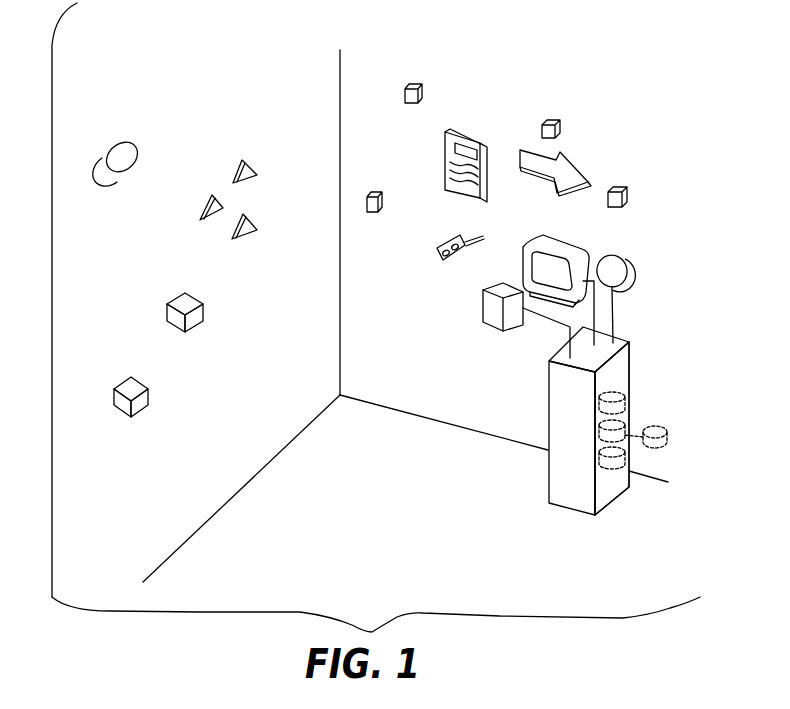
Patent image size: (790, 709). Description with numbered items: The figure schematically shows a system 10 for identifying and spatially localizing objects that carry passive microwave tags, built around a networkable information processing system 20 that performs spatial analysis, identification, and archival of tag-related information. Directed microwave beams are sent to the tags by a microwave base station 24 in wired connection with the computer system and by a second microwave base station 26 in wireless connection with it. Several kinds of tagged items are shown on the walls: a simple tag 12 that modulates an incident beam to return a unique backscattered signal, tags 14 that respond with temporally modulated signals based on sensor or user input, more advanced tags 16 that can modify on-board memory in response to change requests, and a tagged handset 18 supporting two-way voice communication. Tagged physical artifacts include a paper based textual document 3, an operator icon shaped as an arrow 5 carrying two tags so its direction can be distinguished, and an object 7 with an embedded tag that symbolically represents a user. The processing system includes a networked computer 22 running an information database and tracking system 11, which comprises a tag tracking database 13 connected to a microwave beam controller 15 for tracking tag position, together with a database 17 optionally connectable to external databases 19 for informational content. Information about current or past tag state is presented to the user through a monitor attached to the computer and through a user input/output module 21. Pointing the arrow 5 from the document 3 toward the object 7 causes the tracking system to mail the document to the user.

The system 10 is at (592, 53).
The paper based textual document 3 is at (438, 155).
The arrow 5 is at (575, 162).
The object 7 is at (620, 185).
The information database and tracking system 11 is at (617, 373).
The tag 12 is at (420, 73).
The tag tracking database 13 is at (628, 414).
The tags 14 is at (233, 153).
The microwave beam controller 15 is at (630, 386).
The tags 16 is at (120, 372).
The database 17 is at (628, 458).
The tagged handset 18 is at (472, 233).
The external databases 19 is at (667, 427).
The networkable information processing system 20 is at (573, 238).
The user input/output module 21 is at (473, 298).
The networked computer 22 is at (538, 383).
The microwave base station 24 is at (627, 257).
The microwave base station 26 is at (128, 130).